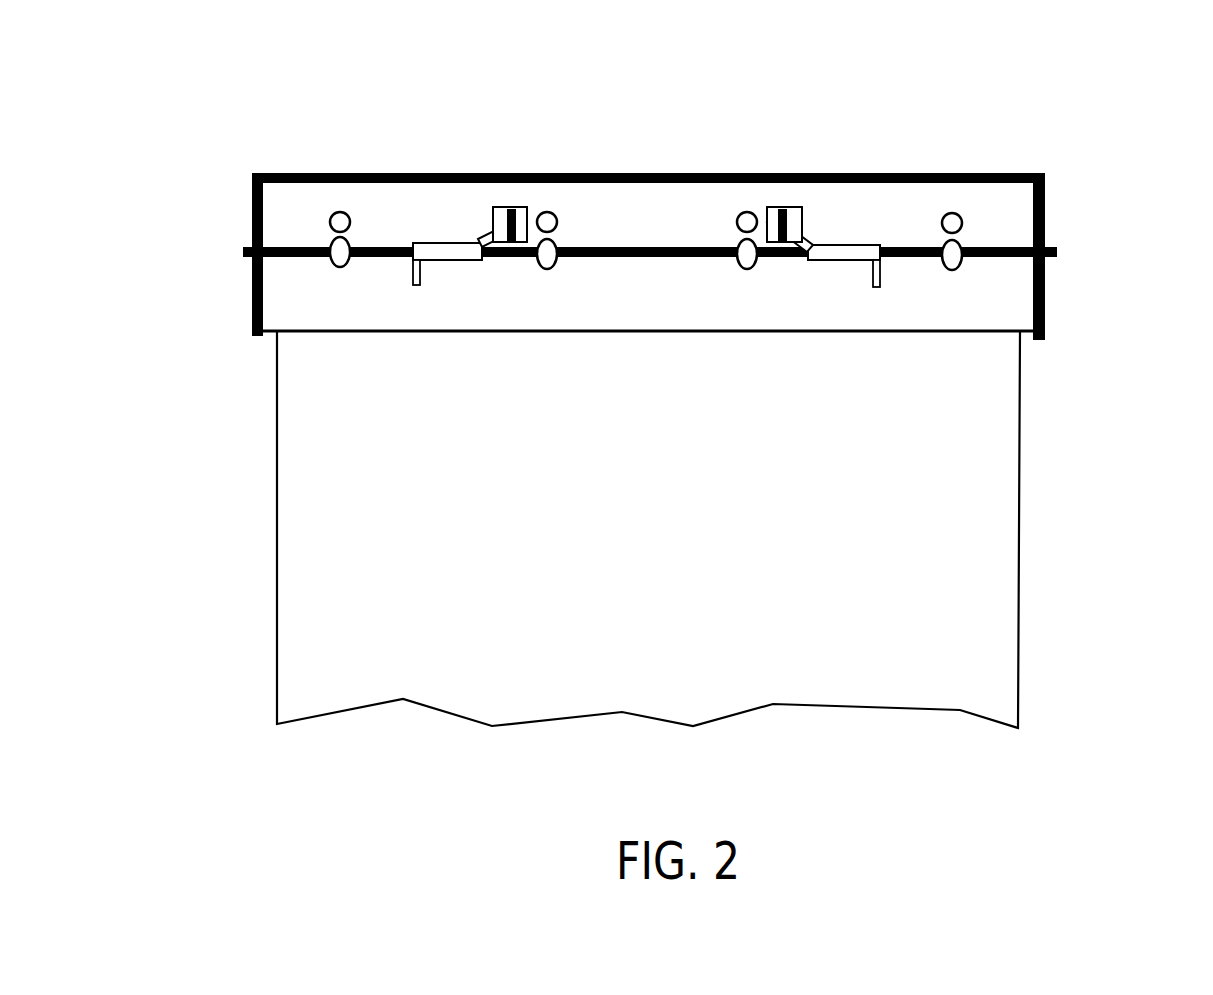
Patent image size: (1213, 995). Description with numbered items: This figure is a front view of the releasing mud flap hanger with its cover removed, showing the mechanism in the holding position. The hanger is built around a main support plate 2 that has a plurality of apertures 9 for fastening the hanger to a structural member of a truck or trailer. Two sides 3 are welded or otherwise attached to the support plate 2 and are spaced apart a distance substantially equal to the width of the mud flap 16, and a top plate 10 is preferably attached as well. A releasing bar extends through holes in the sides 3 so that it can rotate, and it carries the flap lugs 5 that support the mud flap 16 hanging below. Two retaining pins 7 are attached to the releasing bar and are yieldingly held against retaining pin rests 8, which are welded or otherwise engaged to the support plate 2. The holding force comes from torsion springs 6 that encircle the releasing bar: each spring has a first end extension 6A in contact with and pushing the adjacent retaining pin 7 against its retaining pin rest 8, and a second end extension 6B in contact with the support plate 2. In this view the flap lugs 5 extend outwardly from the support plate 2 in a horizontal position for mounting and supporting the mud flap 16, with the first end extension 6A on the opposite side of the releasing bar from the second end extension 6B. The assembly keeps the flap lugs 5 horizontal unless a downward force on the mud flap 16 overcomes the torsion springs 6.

The main support plate 2 is at (645, 220).
The sides 3 is at (252, 295).
The flap lugs 5 is at (352, 243).
The torsion springs 6 is at (652, 273).
The first end extension 6A is at (497, 255).
The second end extension 6B is at (420, 285).
The retaining pins 7 is at (509, 209).
The retaining pin rests 8 is at (495, 210).
The apertures 9 is at (340, 222).
The top plate 10 is at (665, 208).
The mud flap 16 is at (1003, 629).